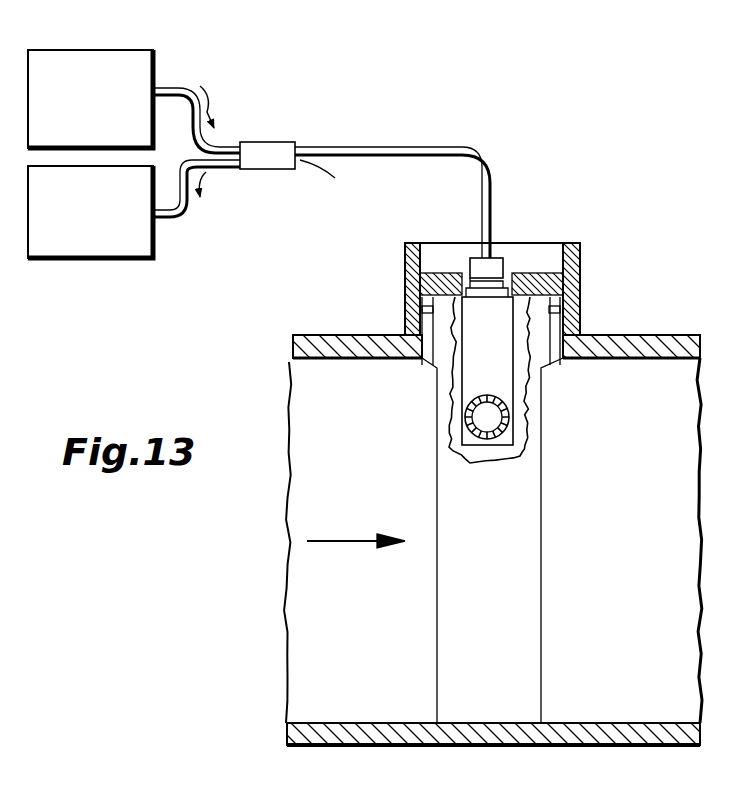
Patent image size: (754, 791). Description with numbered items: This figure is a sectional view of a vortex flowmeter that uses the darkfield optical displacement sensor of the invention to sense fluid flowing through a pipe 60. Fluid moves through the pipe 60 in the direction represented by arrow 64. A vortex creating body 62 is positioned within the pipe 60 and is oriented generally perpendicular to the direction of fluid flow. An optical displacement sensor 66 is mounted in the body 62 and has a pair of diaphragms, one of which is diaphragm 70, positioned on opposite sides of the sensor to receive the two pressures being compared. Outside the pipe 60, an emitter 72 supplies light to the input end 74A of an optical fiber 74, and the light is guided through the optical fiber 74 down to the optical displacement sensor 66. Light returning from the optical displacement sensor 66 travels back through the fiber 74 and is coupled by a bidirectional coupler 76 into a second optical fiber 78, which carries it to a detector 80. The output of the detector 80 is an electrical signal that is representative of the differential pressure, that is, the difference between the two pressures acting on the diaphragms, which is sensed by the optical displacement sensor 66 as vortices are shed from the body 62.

The pipe 60 is at (633, 335).
The vortex creating body 62 is at (437, 632).
The arrow 64 is at (345, 541).
The optical displacement sensor 66 is at (465, 405).
The diaphragm 70 is at (541, 411).
The emitter 72 is at (120, 78).
The optical fiber 74 is at (213, 103).
The input end 74A is at (153, 86).
The bidirectional coupler 76 is at (273, 158).
The optical fiber 78 is at (190, 205).
The detector 80 is at (123, 243).